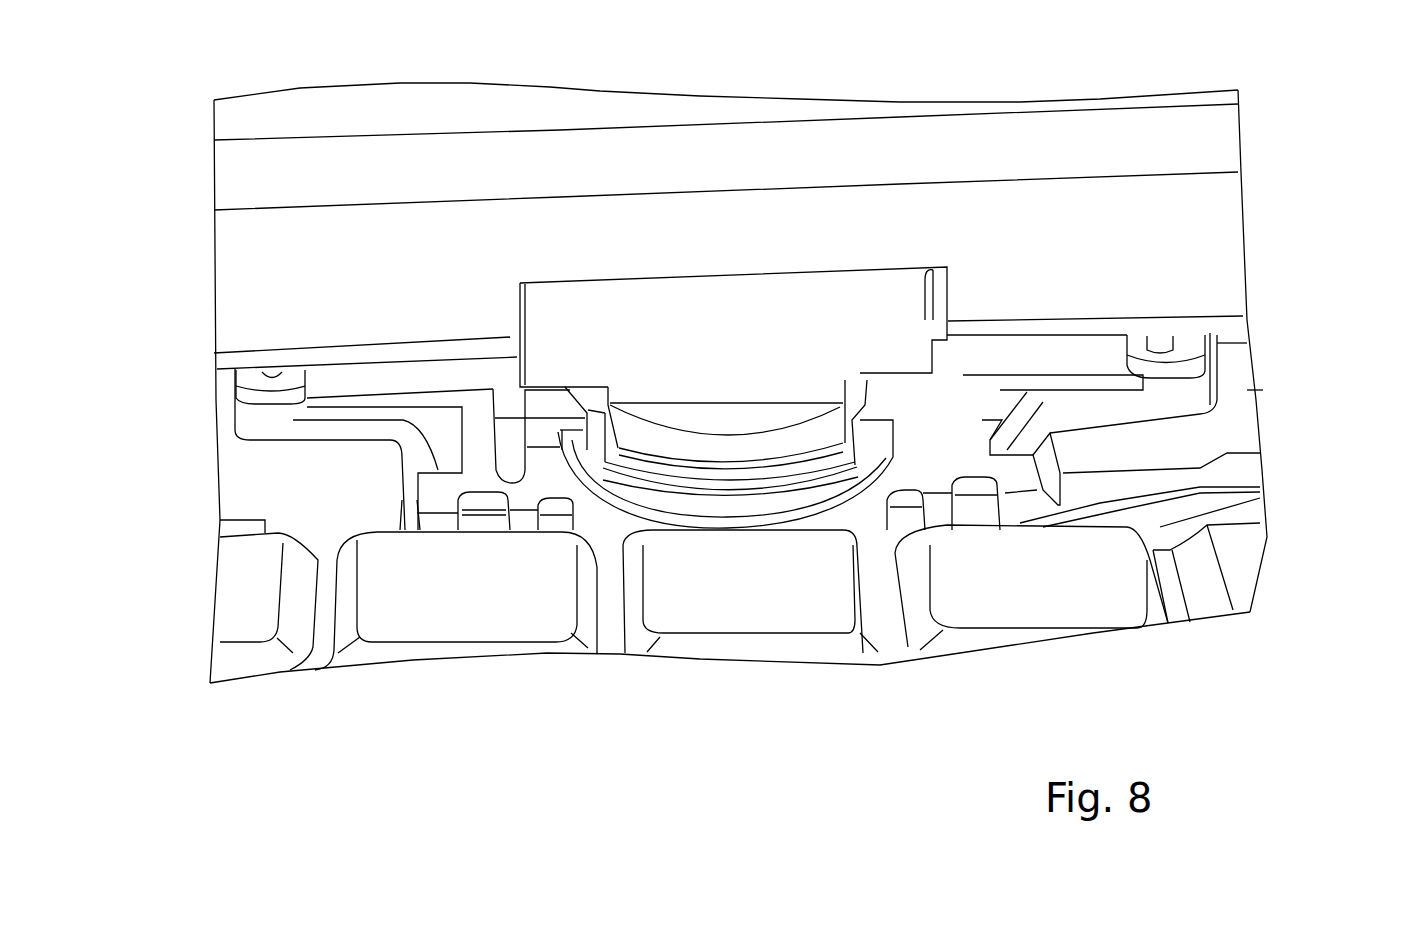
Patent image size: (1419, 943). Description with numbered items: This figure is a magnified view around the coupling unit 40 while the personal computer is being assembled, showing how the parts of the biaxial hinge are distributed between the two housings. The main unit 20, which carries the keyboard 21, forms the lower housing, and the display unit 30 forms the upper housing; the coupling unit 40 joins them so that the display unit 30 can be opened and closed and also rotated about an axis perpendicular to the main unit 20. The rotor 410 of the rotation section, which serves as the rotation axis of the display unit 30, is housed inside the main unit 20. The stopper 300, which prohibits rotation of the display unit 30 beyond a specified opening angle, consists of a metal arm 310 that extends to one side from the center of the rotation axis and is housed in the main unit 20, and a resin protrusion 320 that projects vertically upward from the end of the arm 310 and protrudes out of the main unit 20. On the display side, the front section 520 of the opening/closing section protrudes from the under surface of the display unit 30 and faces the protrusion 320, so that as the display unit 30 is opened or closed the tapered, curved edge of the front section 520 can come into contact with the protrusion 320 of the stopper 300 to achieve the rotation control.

The display unit 30 is at (1254, 192).
The coupling unit 40 is at (555, 310).
The front section 520 is at (271, 370).
The stopper 300 is at (660, 423).
The protrusion 320 is at (262, 395).
The arm 310 is at (333, 435).
The rotor 410 is at (745, 440).
The main unit 20 is at (1272, 470).
The keyboard 21 is at (238, 578).